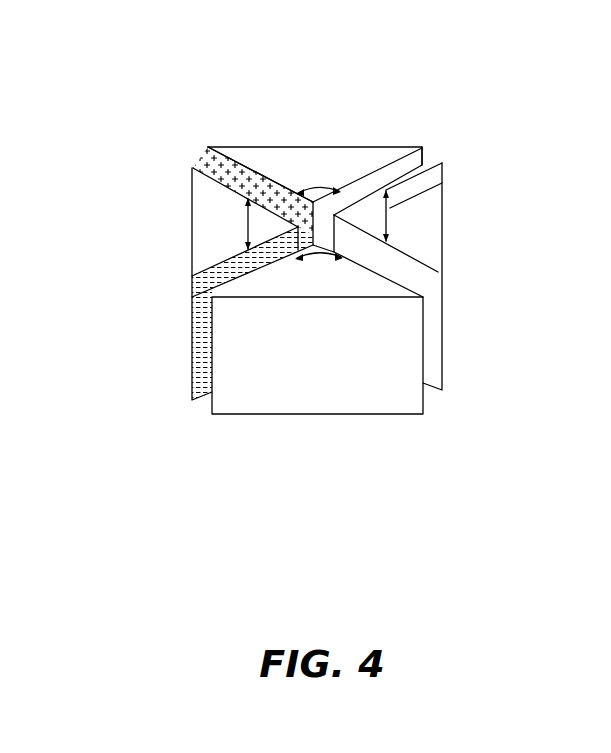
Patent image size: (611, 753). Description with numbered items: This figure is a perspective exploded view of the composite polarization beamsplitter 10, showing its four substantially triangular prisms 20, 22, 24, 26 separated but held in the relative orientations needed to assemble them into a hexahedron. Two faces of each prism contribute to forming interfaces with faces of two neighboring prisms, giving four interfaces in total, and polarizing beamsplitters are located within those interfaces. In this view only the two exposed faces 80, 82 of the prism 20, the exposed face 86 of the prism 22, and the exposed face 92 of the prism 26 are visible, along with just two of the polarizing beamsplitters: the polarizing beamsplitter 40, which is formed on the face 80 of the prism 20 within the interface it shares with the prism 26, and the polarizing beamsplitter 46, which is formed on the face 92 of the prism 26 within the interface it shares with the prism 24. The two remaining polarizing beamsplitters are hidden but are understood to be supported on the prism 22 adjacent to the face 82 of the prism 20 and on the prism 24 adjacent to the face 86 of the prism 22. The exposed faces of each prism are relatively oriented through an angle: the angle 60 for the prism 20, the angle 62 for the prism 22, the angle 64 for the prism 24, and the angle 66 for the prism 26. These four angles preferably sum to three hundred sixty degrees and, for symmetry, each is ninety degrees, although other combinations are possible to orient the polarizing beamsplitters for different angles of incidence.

The composite polarization beamsplitter 10 is at (574, 64).
The triangular prism 20 is at (362, 160).
The triangular prism 22 is at (430, 178).
The triangular prism 24 is at (373, 405).
The triangular prism 26 is at (203, 233).
The polarizing beamsplitter 40 is at (208, 148).
The polarizing beamsplitter 46 is at (192, 298).
The angle 60 is at (307, 187).
The angle 62 is at (443, 196).
The angle 64 is at (320, 260).
The angle 66 is at (240, 214).
The exposed face 80 is at (262, 178).
The exposed face 82 is at (418, 147).
The exposed face 86 is at (427, 287).
The exposed face 92 is at (192, 362).